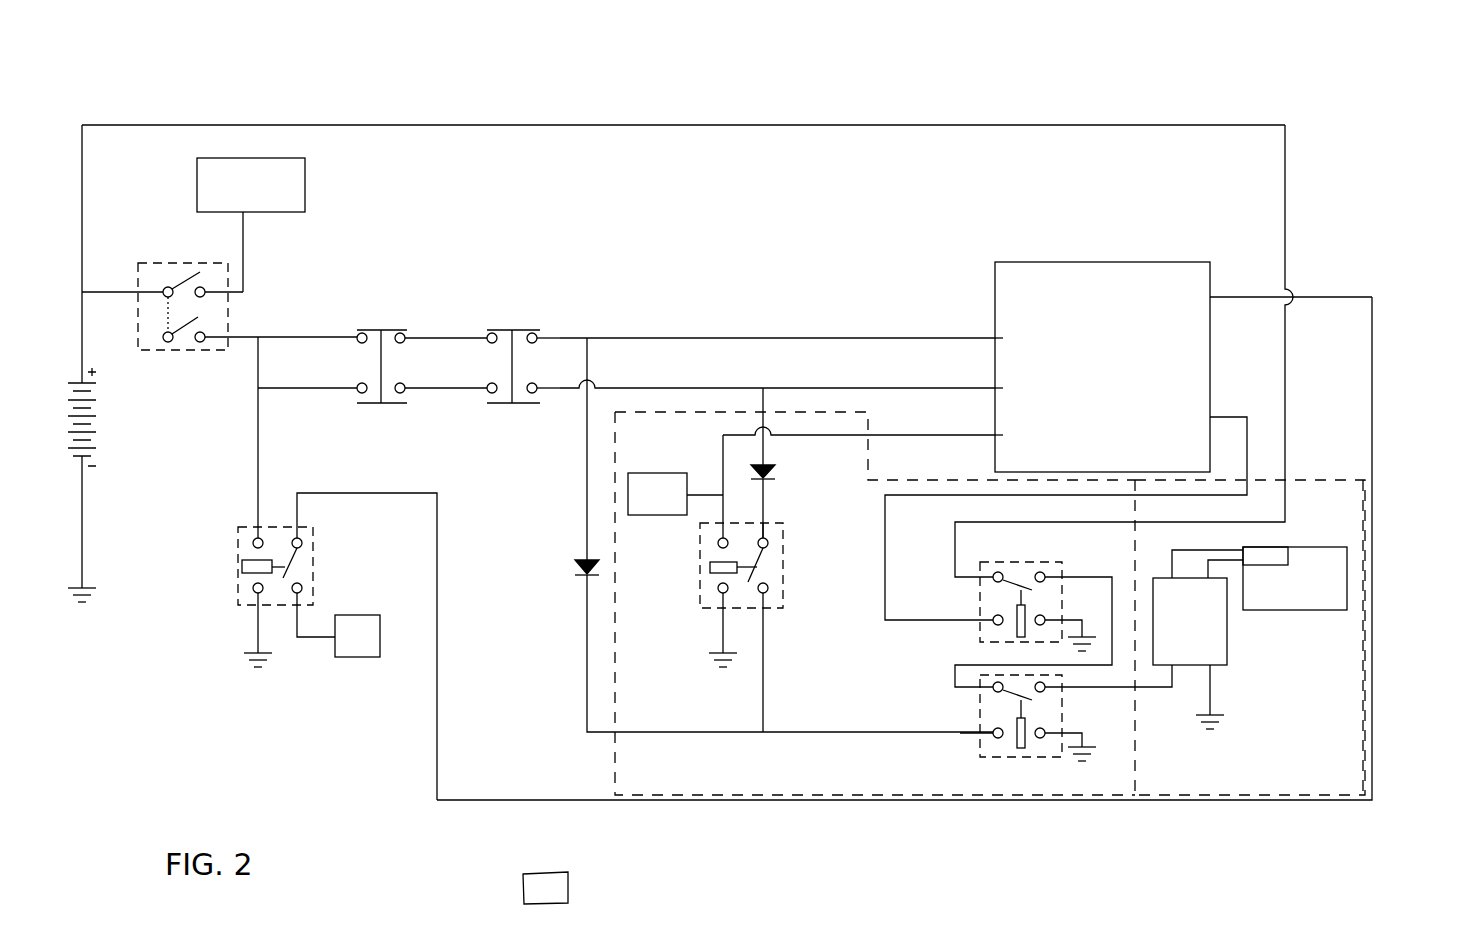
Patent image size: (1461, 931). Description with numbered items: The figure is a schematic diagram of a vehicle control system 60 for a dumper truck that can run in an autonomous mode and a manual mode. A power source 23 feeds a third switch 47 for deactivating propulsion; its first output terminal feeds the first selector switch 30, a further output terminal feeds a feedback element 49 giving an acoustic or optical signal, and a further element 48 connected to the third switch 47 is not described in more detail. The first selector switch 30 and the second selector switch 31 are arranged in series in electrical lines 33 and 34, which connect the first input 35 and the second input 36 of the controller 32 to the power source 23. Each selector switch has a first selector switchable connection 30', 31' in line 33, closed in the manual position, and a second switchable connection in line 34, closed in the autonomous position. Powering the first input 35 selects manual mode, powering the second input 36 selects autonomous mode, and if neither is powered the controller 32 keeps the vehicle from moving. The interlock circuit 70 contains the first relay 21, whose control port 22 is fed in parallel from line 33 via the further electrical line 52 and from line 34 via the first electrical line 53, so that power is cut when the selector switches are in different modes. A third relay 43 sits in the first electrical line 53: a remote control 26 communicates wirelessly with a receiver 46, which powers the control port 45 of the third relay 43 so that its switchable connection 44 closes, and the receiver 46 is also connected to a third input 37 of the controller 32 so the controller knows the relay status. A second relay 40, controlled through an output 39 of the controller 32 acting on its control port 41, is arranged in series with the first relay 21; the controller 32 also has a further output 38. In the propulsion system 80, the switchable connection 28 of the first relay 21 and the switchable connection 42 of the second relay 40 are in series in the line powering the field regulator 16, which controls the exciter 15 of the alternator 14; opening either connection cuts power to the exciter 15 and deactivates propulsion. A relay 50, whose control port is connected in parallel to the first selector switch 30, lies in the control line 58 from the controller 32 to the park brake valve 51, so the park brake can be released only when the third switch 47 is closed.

The vehicle control system 60 is at (674, 90).
The power source 23 is at (110, 431).
The third switch 47 is at (155, 262).
The vehicle component 48 is at (297, 186).
The feedback element 49 is at (237, 327).
The first selector switch 30 is at (395, 330).
The first selector switchable connection 30' is at (446, 319).
The second selector switch 31 is at (526, 330).
The first selector switchable connection 31' is at (563, 319).
The electrical line 33 is at (678, 336).
The electrical line 34 is at (670, 388).
The controller 32 is at (1102, 367).
The first input 35 is at (1005, 336).
The second input 36 is at (1005, 390).
The third input 37 is at (1005, 438).
The first output 38 is at (1201, 420).
The output 39 is at (1201, 298).
The control line 58 is at (440, 620).
The further electrical line 52 is at (583, 653).
The first electrical line 53 is at (767, 655).
The interlock circuit 70 is at (758, 778).
The propulsion system 80 is at (1265, 783).
The receiver 46 is at (656, 475).
The control port of the third relay 45 is at (715, 513).
The third relay 43 is at (783, 570).
The switchable connection of the third relay 44 is at (770, 517).
The relay 50 is at (237, 595).
The park brake valve 51 is at (362, 623).
The second relay 40 is at (1045, 560).
The control port of the second relay 41 is at (970, 628).
The switchable connection of the second relay 42 is at (970, 580).
The first relay 21 is at (1005, 757).
The control port of the first relay 22 is at (973, 740).
The switchable connection of the first relay 28 is at (963, 693).
The field regulator 16 is at (1208, 640).
The exciter 15 is at (1268, 553).
The alternator 14 is at (1333, 583).
The remote control 26 is at (562, 853).